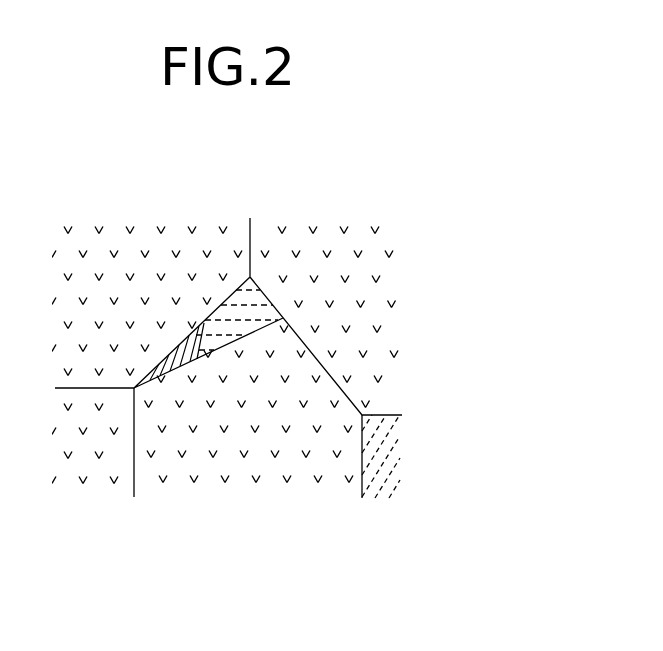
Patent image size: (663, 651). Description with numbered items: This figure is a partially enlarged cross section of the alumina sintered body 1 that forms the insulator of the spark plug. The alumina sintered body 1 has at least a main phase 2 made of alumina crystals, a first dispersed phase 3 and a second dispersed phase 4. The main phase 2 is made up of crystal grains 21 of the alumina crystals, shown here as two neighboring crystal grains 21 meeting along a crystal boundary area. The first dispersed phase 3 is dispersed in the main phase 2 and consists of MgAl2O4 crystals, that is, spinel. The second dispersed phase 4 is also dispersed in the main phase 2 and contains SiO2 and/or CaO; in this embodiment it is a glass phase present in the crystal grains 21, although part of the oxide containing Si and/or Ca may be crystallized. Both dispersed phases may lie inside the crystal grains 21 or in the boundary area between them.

The alumina sintered body 1 is at (356, 196).
The main phase 2 is at (232, 580).
The crystal grains 21 is at (102, 473).
The first dispersed phase 3 is at (235, 307).
The second dispersed phase 4 is at (175, 349).